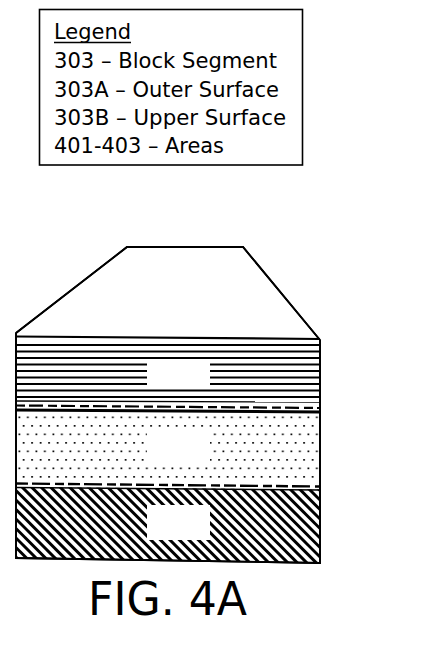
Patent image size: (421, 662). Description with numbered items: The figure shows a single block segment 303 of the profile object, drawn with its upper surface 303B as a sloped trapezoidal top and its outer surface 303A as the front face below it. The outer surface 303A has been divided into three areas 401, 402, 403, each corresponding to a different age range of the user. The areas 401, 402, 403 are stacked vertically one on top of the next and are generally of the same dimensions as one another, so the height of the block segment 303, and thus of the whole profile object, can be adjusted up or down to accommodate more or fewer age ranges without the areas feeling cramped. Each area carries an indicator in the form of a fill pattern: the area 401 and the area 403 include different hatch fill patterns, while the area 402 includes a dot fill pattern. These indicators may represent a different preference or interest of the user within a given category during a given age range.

The block segment 303 is at (218, 217).
The outer surface 303A is at (332, 397).
The upper surface 303B is at (268, 264).
The area 401 is at (193, 385).
The area 402 is at (193, 457).
The area 403 is at (193, 536).